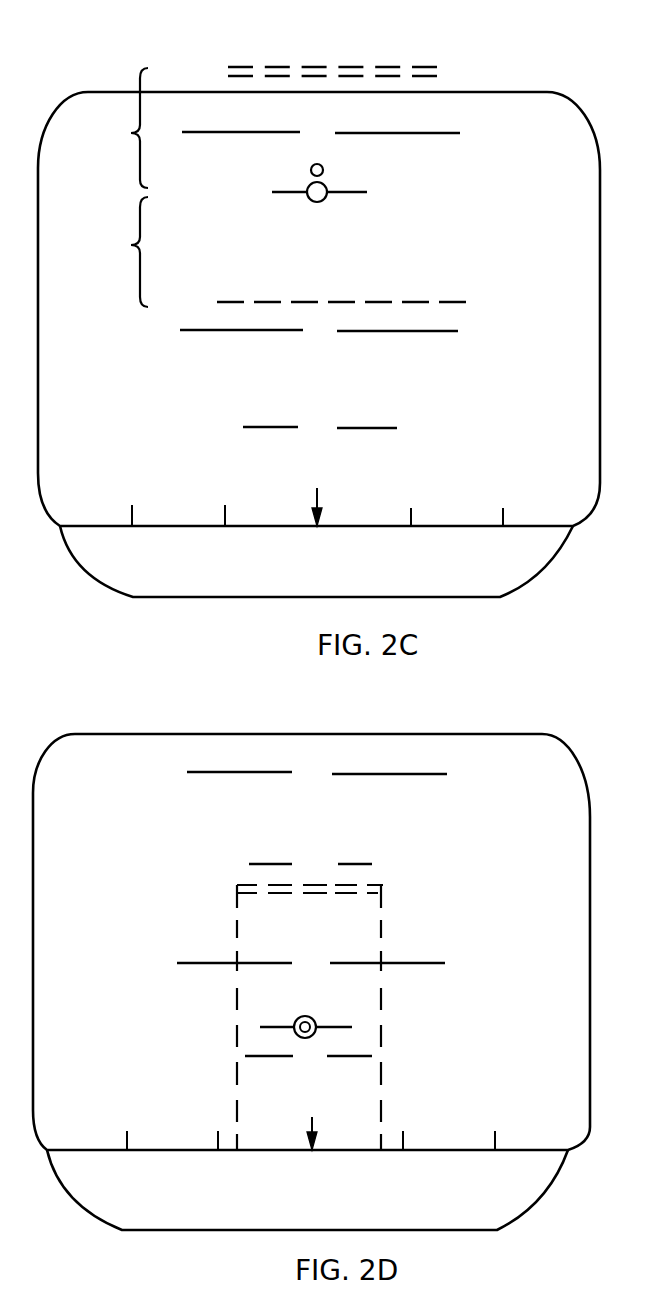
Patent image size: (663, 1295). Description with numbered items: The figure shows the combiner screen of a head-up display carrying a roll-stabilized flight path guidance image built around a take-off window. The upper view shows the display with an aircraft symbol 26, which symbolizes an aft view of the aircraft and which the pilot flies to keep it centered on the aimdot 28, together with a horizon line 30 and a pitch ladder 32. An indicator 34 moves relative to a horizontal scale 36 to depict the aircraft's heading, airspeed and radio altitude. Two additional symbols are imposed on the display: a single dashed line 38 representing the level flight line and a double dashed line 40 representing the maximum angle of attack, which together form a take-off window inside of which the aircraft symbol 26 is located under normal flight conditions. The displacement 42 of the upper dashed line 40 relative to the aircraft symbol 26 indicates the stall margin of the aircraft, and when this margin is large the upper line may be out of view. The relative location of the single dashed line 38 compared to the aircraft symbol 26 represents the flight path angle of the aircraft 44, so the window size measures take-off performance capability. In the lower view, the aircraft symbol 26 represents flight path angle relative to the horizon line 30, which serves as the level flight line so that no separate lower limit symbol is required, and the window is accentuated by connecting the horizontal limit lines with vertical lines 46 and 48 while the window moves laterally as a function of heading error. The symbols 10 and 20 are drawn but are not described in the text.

In FIG. 2C, the aircraft reference symbol line 10 is at (319, 330).
In FIG. 2D, the aircraft reference symbol line 10 is at (313, 963).
In FIG. 2C, the horizon line 20 is at (321, 130).
In FIG. 2D, the horizon line 20 is at (317, 774).
In FIG. 2C, the aircraft symbol 26 is at (350, 193).
In FIG. 2D, the aircraft symbol 26 is at (337, 1028).
In FIG. 2C, the aimdot 28 is at (310, 173).
In FIG. 2D, the aimdot 28 is at (297, 1018).
In FIG. 2C, the horizon line 30 is at (470, 528).
In FIG. 2D, the horizon line 30 is at (475, 1152).
In FIG. 2C, the pitch ladder 32 is at (427, 333).
In FIG. 2D, the pitch ladder 32 is at (413, 965).
In FIG. 2C, the indicator 34 is at (320, 497).
In FIG. 2D, the indicator 34 is at (315, 1127).
In FIG. 2C, the horizontal scale 36 is at (413, 515).
In FIG. 2D, the horizontal scale 36 is at (406, 1140).
In FIG. 2C, the single dashed line 38 is at (447, 302).
In FIG. 2C, the double dashed line 40 is at (424, 66).
In FIG. 2D, the double dashed line 40 is at (377, 885).
In FIG. 2C, the displacement of the upper dashed line 42 is at (121, 128).
In FIG. 2C, the flight path angle of the aircraft 44 is at (117, 252).
In FIG. 2D, the vertical line 46 is at (235, 930).
In FIG. 2D, the vertical line 48 is at (384, 921).